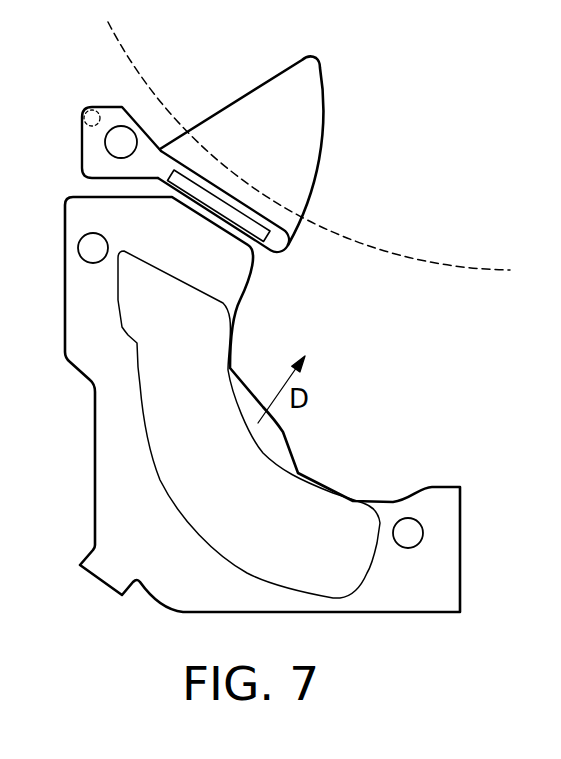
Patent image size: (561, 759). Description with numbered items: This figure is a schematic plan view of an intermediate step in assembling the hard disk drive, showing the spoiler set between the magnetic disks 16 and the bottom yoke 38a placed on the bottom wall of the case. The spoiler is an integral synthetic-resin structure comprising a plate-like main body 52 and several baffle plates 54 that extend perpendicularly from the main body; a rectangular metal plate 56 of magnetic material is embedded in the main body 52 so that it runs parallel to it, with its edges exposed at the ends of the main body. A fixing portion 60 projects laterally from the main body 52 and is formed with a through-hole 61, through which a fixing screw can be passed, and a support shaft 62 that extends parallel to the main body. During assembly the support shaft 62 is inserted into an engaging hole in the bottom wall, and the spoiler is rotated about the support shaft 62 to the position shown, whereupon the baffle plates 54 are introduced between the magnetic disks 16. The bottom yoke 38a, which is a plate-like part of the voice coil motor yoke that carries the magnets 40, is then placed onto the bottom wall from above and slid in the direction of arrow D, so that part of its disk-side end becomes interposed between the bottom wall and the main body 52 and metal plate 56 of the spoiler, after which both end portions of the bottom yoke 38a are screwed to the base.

The magnetic disks 16 is at (467, 271).
The bottom yoke 38a is at (105, 477).
The magnets 40 is at (157, 430).
The main body 52 is at (287, 247).
The baffle plates 54 is at (295, 163).
The metal plate 56 is at (257, 238).
The fixing portion 60 is at (93, 132).
The through-hole 61 is at (115, 146).
The support shaft 62 is at (86, 111).